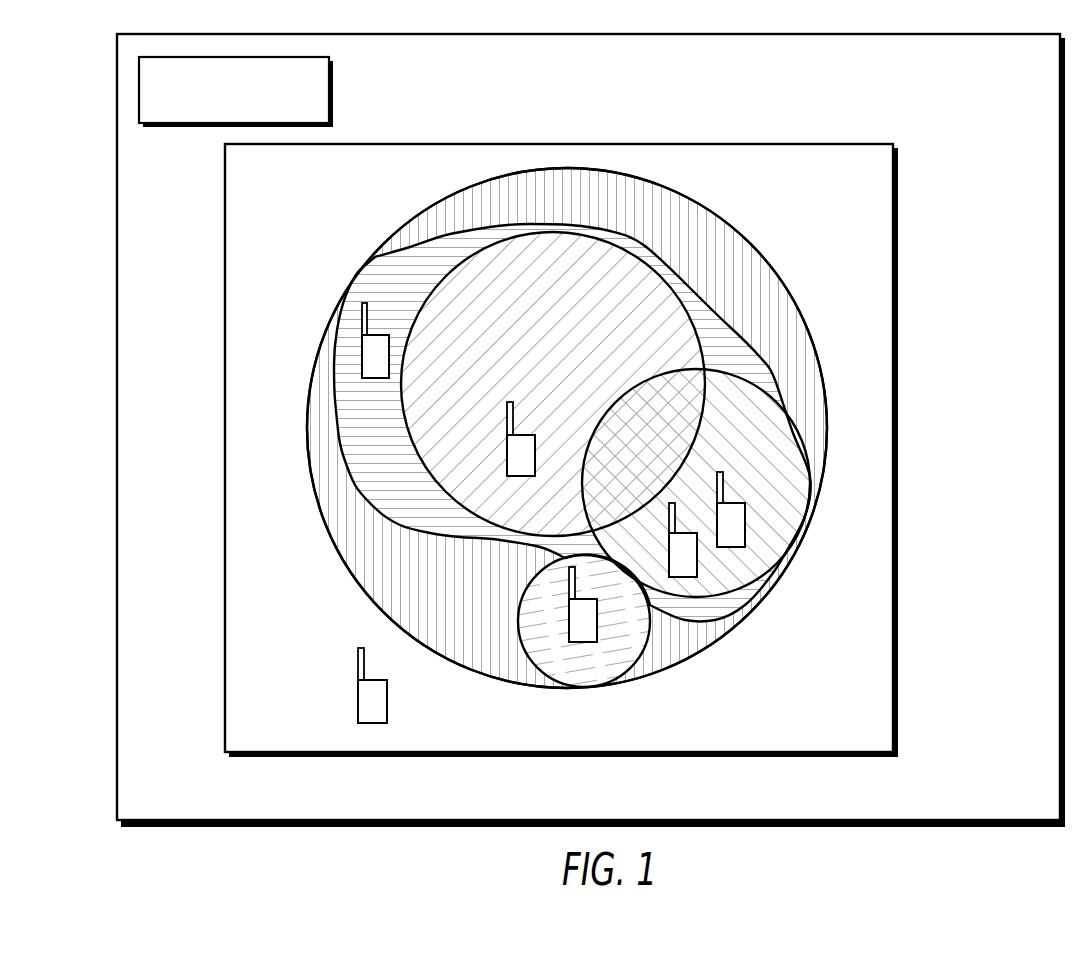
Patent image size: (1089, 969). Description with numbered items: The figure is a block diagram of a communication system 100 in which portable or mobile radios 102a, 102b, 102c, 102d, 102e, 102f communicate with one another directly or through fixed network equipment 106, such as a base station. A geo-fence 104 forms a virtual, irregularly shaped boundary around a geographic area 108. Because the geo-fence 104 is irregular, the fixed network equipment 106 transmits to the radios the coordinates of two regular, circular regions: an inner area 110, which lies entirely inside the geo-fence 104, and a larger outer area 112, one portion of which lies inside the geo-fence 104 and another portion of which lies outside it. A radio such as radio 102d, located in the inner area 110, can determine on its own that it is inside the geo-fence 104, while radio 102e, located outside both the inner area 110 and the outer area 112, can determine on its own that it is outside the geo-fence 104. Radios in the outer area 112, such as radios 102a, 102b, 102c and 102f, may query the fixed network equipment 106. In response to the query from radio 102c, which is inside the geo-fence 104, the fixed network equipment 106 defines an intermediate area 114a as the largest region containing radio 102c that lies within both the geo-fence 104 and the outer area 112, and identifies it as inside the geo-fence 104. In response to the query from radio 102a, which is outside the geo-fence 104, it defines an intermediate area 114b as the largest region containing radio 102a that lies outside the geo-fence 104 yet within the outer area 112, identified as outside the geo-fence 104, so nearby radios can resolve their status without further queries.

The communication system 100 is at (963, 34).
The radio 102a is at (590, 632).
The radio 102b is at (367, 347).
The radio 102c is at (738, 532).
The radio 102d is at (507, 460).
The radio 102e is at (367, 702).
The radio 102f is at (684, 568).
The geo-fence 104 is at (340, 455).
The fixed network equipment 106 is at (331, 86).
The geographic area 108 is at (413, 270).
The inner area 110 is at (553, 384).
The outer area 112 is at (567, 428).
The intermediate area 114a is at (778, 453).
The intermediate area 114b is at (560, 576).